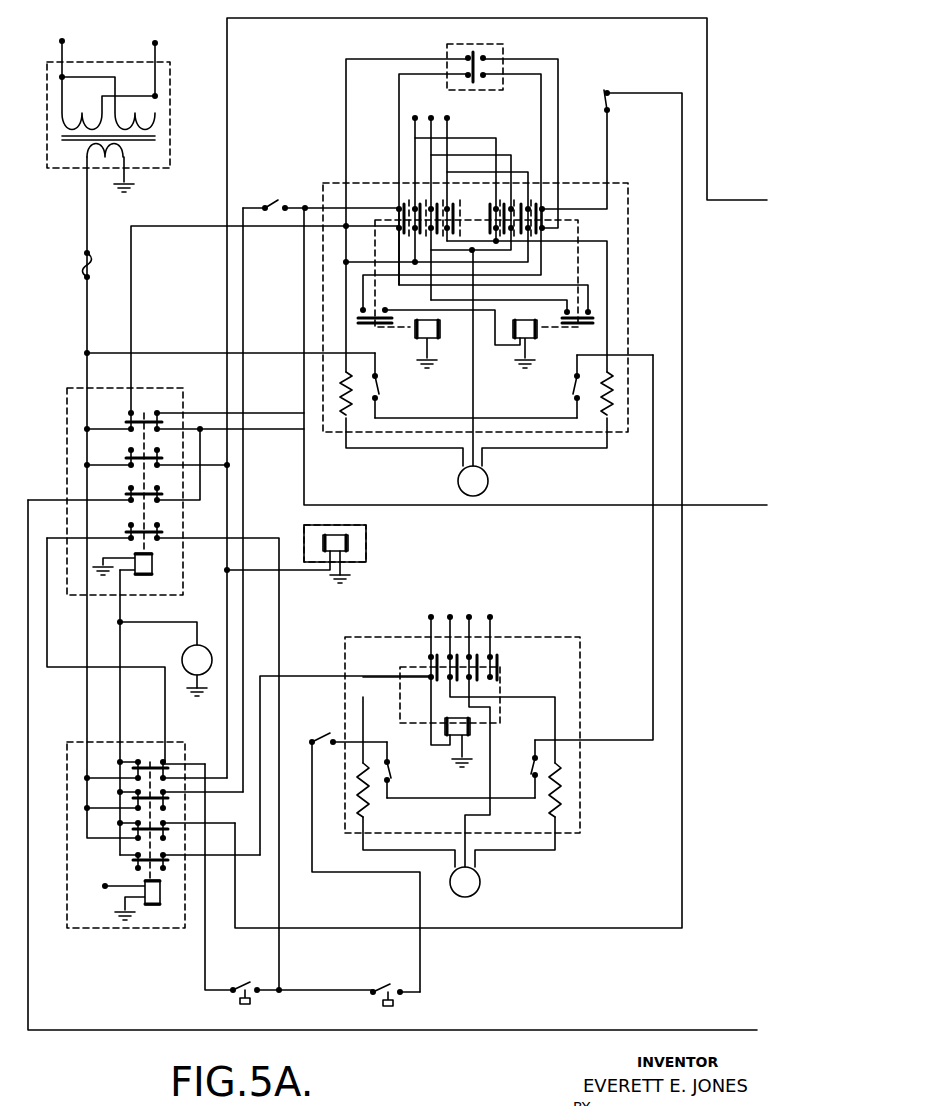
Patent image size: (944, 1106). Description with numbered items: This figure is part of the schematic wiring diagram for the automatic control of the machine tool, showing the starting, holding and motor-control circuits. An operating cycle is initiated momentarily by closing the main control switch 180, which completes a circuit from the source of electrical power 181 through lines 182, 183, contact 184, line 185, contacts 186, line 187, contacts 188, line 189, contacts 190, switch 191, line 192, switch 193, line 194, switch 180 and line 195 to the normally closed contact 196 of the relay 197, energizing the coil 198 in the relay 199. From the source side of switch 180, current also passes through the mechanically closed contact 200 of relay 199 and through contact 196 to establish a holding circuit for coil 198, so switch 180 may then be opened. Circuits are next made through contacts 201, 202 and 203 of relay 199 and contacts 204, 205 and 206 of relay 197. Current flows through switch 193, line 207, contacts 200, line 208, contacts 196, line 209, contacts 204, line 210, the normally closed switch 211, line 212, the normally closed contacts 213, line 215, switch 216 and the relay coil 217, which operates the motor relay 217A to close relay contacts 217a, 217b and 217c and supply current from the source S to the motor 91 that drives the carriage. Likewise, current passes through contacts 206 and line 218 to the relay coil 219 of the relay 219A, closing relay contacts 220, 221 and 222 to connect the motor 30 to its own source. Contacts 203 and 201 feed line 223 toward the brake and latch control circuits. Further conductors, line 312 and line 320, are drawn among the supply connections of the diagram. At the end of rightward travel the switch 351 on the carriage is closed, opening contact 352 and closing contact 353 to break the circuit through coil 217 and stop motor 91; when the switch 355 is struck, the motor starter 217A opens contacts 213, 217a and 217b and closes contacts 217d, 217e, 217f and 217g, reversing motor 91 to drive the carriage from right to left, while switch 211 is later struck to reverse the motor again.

The motor 30 is at (480, 882).
The motor 91 is at (457, 479).
The main control switch 180 is at (240, 988).
The source of electrical power 181 is at (107, 62).
The line 182 is at (85, 316).
The line 183 is at (181, 353).
The contact 184 is at (381, 390).
The line 185 is at (447, 415).
The contacts 186 is at (573, 390).
The line 187 is at (653, 562).
The contacts 188 is at (533, 770).
The line 189 is at (459, 800).
The contacts 190 is at (392, 770).
The switch 191 is at (324, 739).
The line 192 is at (420, 907).
The switch 193 is at (381, 988).
The line 194 is at (338, 993).
The line 195 is at (205, 963).
The normally closed contact 196 is at (147, 760).
The relay 197 is at (103, 930).
The coil 198 is at (146, 577).
The relay 199 is at (66, 440).
The mechanically closed contact 200 is at (129, 531).
The contact 201 is at (129, 493).
The contact 202 is at (127, 458).
The contact 203 is at (158, 412).
The relay contacts 204 is at (140, 795).
The contacts 205 is at (137, 840).
The contacts 206 is at (132, 886).
The line 207 is at (280, 963).
The line 208 is at (67, 672).
The line 209 is at (120, 708).
The line 210 is at (243, 493).
The normally closed switch 211 is at (268, 202).
The line 212 is at (312, 202).
The normally closed contacts 213 is at (398, 208).
The line 215 is at (590, 307).
The switch 216 is at (545, 326).
The relay coil 217 is at (430, 338).
The motor relay 217A is at (389, 173).
The relay contact 217a is at (404, 226).
The relay contact 217b is at (440, 214).
The relay contact 217c is at (454, 227).
The contact 217d is at (482, 217).
The contact 217e is at (497, 200).
The contact 217f is at (522, 208).
The contact 217g is at (542, 210).
The line 218 is at (256, 858).
The relay coil 219 is at (459, 718).
The relay 219A is at (513, 677).
The relay contact 220 is at (455, 680).
The relay contact 221 is at (473, 663).
The relay contact 222 is at (503, 664).
The line 223 is at (493, 1030).
The conductor 312 is at (228, 73).
The conductor 320 is at (753, 506).
The switch 351 is at (506, 46).
The contact 352 is at (466, 58).
The contact 353 is at (485, 60).
The switch 355 is at (604, 97).
The source S is at (461, 132).